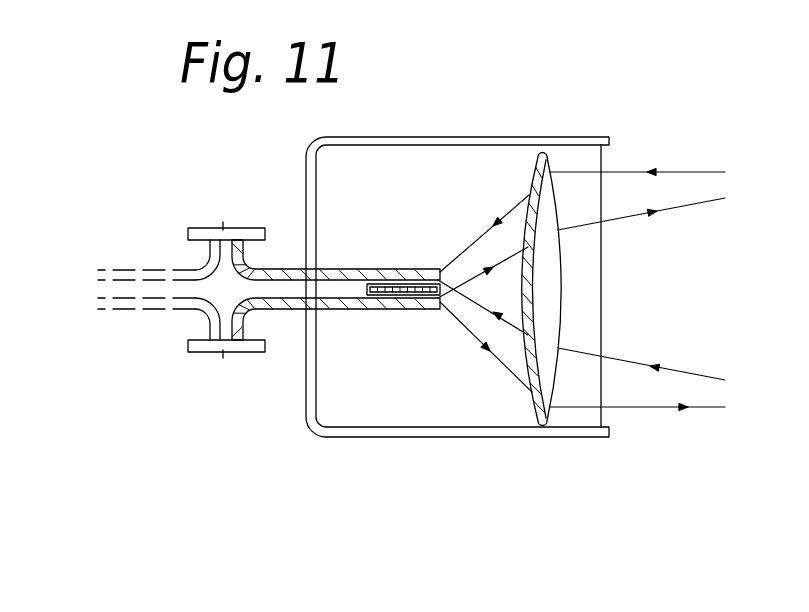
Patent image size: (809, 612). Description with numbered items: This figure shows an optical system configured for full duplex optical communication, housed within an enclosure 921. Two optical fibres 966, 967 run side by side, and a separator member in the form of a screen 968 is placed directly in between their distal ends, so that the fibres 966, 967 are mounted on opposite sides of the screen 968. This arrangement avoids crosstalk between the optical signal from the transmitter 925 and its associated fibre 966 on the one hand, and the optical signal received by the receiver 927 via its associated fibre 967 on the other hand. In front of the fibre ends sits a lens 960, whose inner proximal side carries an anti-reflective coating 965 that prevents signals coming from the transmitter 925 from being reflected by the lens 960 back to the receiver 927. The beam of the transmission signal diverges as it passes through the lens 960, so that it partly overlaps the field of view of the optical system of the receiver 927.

The housing 921 is at (457, 437).
The transmitter 925 is at (222, 356).
The receiver 927 is at (222, 228).
The lens 960 is at (549, 198).
The anti-reflective coating 965 is at (539, 166).
The optical fibre 966 is at (345, 303).
The optical fibre 967 is at (345, 272).
The separator member 968 is at (397, 293).